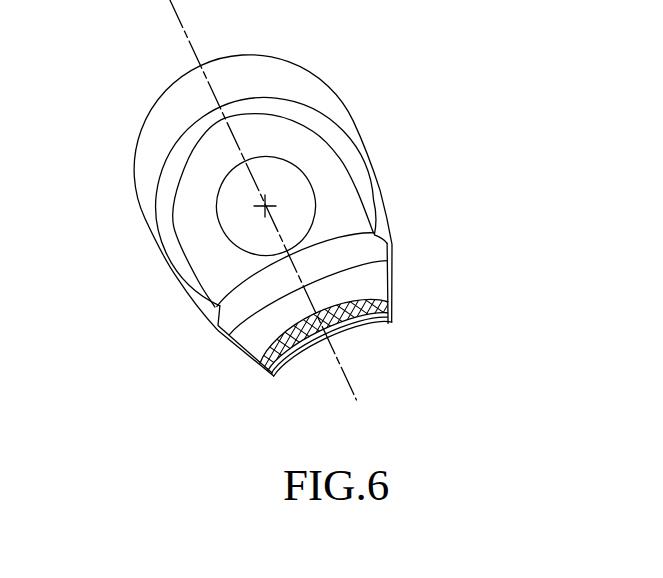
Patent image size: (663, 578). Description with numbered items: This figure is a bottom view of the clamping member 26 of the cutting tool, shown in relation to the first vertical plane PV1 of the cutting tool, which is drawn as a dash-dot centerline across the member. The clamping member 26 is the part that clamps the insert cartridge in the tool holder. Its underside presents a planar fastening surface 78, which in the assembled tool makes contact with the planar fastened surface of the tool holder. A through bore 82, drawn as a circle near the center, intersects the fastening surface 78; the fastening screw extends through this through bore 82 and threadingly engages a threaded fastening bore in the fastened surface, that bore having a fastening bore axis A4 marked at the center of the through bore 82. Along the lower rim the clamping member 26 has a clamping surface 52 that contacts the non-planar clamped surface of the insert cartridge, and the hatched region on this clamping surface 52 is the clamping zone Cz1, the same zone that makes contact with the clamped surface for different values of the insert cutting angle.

The clamping member 26 is at (380, 77).
The fastening surface 78 is at (351, 178).
The through bore 82 is at (216, 220).
The clamping surface 52 is at (378, 283).
The clamping zone Cz1 is at (365, 327).
The first vertical plane PV1 is at (282, 217).
The fastening bore axis A4 is at (280, 196).